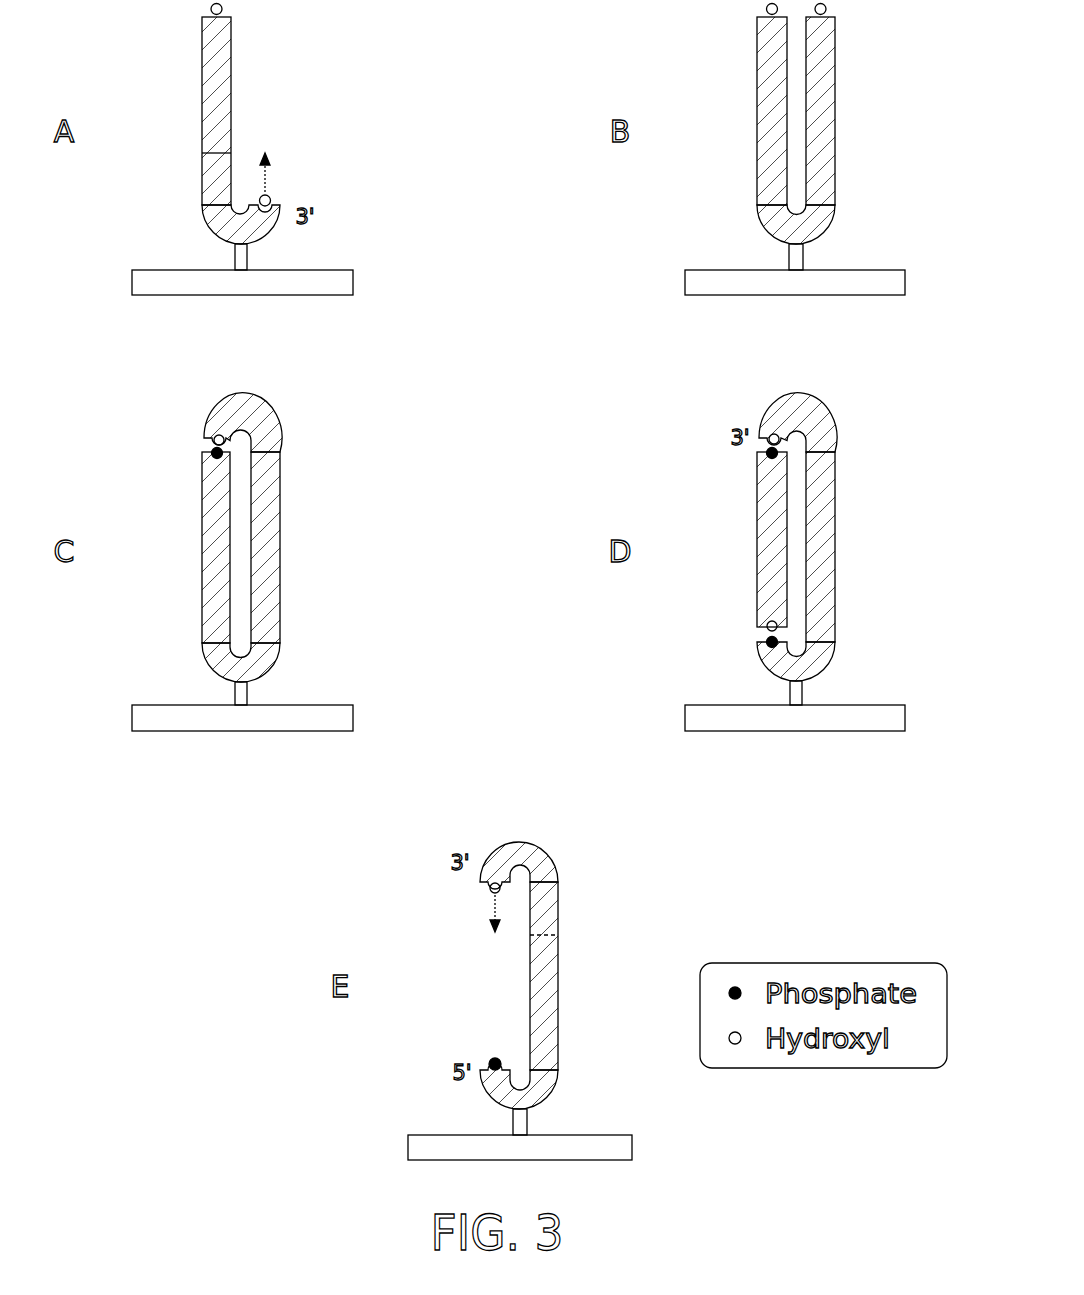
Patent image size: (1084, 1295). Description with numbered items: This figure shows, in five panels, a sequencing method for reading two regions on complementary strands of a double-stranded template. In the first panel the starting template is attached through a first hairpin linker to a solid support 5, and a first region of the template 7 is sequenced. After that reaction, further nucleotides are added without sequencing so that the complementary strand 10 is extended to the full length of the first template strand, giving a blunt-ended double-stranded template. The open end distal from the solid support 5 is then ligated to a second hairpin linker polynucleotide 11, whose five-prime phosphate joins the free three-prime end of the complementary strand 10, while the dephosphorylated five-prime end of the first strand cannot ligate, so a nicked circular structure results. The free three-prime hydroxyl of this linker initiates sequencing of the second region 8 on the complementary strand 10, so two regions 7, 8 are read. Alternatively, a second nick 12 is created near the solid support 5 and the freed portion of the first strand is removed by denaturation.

The solid support 5 is at (893, 296).
The first region of the template 7 is at (167, 153).
The second region of the template to be sequenced 8 is at (570, 882).
The complementary strand 10 is at (848, 17).
The second hairpin linker polynucleotide 11 is at (284, 432).
The second nick 12 is at (760, 635).